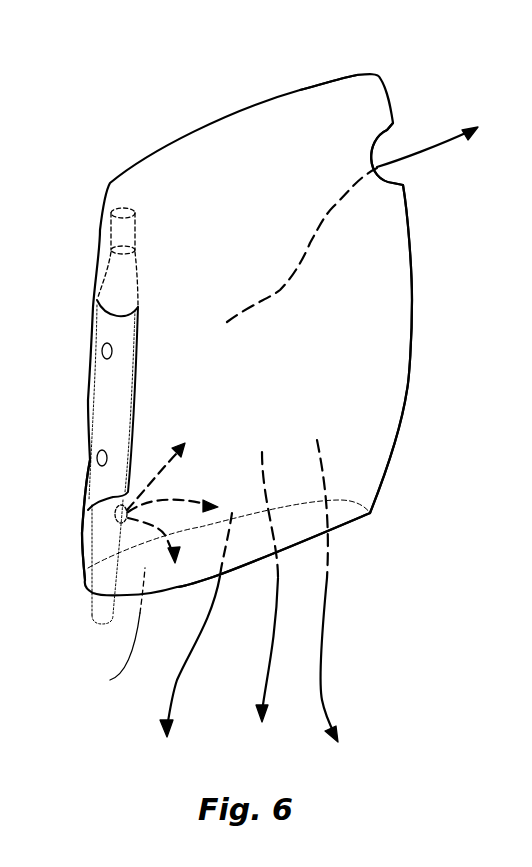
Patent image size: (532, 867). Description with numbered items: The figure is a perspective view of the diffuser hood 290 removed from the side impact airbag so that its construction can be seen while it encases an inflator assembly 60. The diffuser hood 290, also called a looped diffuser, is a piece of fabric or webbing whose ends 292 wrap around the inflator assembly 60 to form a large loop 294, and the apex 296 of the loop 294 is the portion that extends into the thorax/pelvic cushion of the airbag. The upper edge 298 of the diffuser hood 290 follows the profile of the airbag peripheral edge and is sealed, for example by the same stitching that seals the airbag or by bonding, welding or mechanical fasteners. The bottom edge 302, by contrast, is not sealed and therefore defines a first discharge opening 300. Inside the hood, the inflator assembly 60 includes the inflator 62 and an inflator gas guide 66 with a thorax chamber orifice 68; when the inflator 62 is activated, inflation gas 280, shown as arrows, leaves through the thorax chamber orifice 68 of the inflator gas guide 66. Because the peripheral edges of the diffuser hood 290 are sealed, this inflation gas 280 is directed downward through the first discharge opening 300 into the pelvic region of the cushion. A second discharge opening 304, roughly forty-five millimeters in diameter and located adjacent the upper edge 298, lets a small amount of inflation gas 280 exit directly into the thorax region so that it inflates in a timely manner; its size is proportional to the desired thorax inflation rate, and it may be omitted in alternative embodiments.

The inflator assembly 60 is at (83, 347).
The inflator 62 is at (108, 288).
The inflator gas guide 66 is at (100, 535).
The thorax chamber orifice 68 is at (113, 512).
The inflation gas 280 is at (432, 153).
The diffuser hood 290 is at (217, 148).
The ends 292 is at (135, 385).
The loop 294 is at (352, 525).
The apex 296 is at (398, 433).
The upper edge 298 is at (300, 80).
The first discharge opening 300 is at (112, 632).
The bottom edge 302 is at (248, 580).
The second discharge opening 304 is at (393, 143).